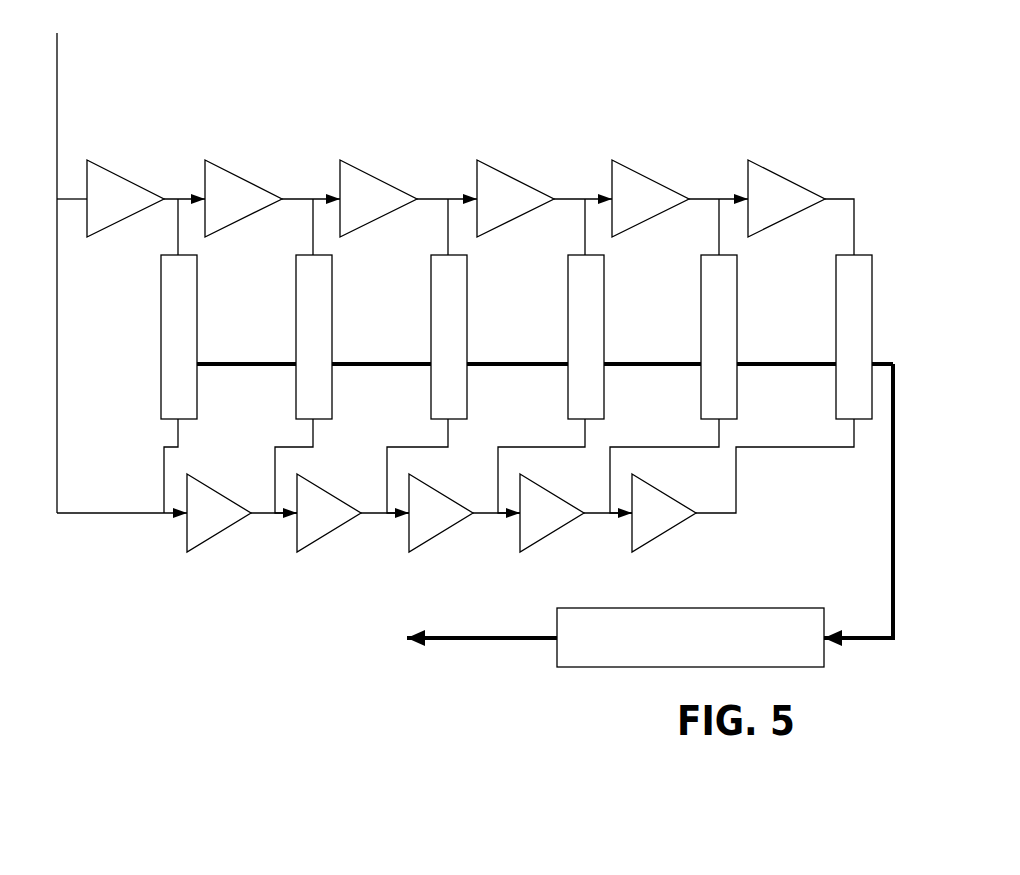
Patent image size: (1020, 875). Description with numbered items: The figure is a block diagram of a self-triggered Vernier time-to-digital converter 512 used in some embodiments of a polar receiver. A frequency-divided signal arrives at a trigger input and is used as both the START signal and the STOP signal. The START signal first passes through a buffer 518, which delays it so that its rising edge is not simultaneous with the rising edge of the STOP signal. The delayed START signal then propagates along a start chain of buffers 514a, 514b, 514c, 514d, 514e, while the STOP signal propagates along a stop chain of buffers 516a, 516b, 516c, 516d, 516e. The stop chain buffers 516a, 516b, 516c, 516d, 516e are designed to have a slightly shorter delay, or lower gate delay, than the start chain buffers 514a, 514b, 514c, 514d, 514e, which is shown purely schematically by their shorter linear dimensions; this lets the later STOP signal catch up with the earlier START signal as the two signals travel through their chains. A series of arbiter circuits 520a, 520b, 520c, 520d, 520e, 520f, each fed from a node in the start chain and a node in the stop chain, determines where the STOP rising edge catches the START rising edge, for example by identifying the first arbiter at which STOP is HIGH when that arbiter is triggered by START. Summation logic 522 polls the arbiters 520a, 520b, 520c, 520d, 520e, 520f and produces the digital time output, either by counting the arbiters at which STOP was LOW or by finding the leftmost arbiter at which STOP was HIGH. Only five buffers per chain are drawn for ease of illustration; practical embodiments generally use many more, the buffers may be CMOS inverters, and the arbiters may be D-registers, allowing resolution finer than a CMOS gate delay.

The self-triggered Vernier time-to-digital converter 512 is at (418, 90).
The buffer 518 is at (118, 172).
The start chain buffer 514a is at (222, 168).
The start chain buffer 514b is at (355, 170).
The start chain buffer 514c is at (500, 172).
The start chain buffer 514d is at (627, 167).
The start chain buffer 514e is at (760, 166).
The stop chain buffer 516a is at (191, 548).
The stop chain buffer 516b is at (301, 548).
The stop chain buffer 516c is at (413, 548).
The stop chain buffer 516d is at (524, 548).
The stop chain buffer 516e is at (636, 548).
The arbiter circuit 520a is at (197, 333).
The arbiter circuit 520b is at (332, 333).
The arbiter circuit 520c is at (467, 333).
The arbiter circuit 520d is at (604, 337).
The arbiter circuit 520e is at (737, 298).
The arbiter circuit 520f is at (836, 355).
The summation logic 522 is at (748, 608).